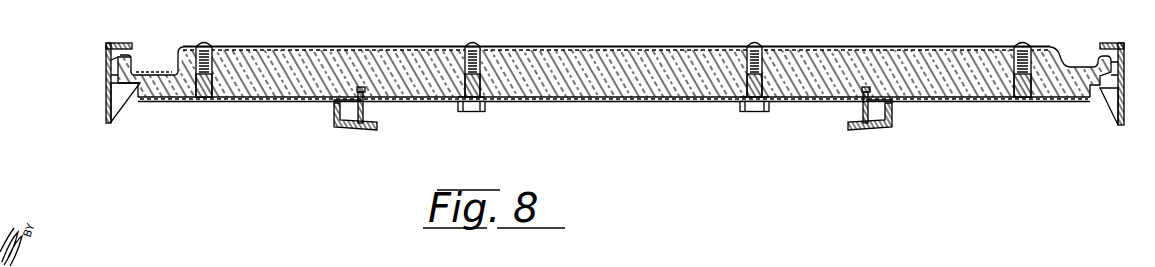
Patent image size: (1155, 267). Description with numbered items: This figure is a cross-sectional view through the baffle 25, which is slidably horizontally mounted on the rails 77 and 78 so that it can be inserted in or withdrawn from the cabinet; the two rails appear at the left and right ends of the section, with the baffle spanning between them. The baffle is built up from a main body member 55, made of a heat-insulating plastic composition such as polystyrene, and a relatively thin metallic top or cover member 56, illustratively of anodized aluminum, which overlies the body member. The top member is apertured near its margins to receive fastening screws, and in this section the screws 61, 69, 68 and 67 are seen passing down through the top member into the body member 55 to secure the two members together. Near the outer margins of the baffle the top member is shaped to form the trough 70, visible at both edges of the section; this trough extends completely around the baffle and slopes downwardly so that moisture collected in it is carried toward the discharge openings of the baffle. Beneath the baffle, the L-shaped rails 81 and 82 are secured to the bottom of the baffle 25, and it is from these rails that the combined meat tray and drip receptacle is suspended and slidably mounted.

The baffle 25 is at (500, 46).
The main body member 55 is at (575, 98).
The top or cover member 56 is at (608, 47).
The fastening screw 61 is at (204, 44).
The fastening screw 67 is at (1022, 43).
The fastening screw 68 is at (753, 43).
The fastening screw 69 is at (471, 43).
The trough 70 is at (150, 60).
The rail 77 is at (108, 97).
The rail 78 is at (1118, 112).
The L-shaped rail 81 is at (378, 127).
The L-shaped rail 82 is at (850, 126).